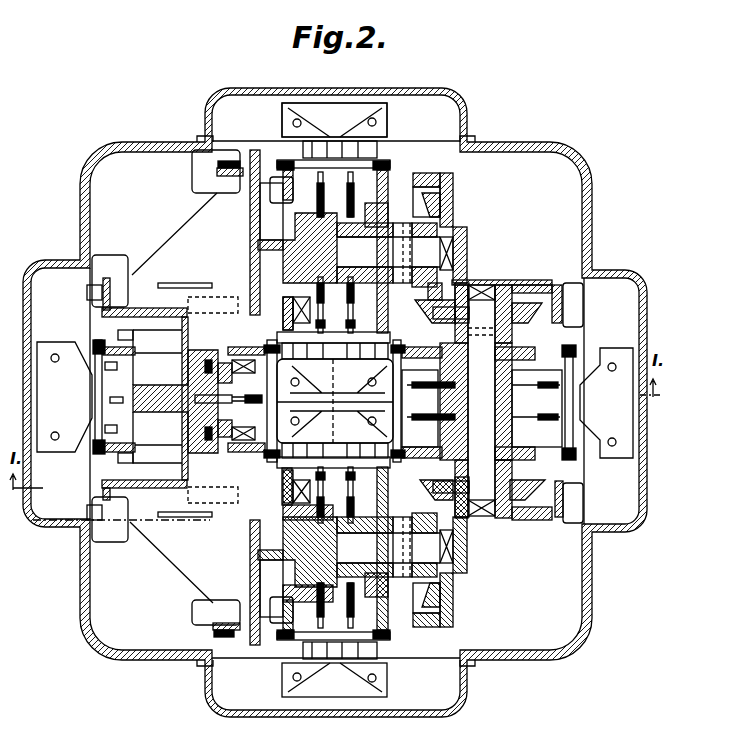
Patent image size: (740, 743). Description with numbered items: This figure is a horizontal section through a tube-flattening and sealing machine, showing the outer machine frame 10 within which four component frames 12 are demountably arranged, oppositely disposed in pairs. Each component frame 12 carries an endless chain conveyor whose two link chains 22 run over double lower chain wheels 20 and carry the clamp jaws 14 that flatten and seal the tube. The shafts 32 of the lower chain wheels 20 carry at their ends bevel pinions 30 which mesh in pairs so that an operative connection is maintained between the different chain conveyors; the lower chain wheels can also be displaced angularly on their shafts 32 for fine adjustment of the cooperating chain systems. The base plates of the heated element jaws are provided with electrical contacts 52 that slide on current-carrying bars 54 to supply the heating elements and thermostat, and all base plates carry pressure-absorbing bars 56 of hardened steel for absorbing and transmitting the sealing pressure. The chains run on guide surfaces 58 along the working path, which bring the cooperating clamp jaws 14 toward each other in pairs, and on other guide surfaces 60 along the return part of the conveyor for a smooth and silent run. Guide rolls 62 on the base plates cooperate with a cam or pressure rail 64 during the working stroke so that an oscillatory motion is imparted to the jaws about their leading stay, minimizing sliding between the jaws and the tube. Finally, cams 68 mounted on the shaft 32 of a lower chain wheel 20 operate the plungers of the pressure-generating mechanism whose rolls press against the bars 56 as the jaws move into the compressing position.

The outer machine frame 10 is at (88, 175).
The component frame 12 is at (247, 212).
The clamp jaw 14 is at (371, 113).
The lower chain wheel 20 is at (390, 186).
The link chain 22 is at (287, 158).
The bevel pinion 30 is at (523, 313).
The shaft 32 is at (428, 547).
The electrical contact 52 is at (560, 420).
The current-carrying bar 54 is at (447, 390).
The pressure-absorbing bar 56 is at (113, 427).
The guide surface 58 is at (282, 300).
The guide surface 60 is at (277, 160).
The guide roll 62 is at (115, 397).
The pressure rail 64 is at (333, 302).
The cam 68 is at (372, 208).